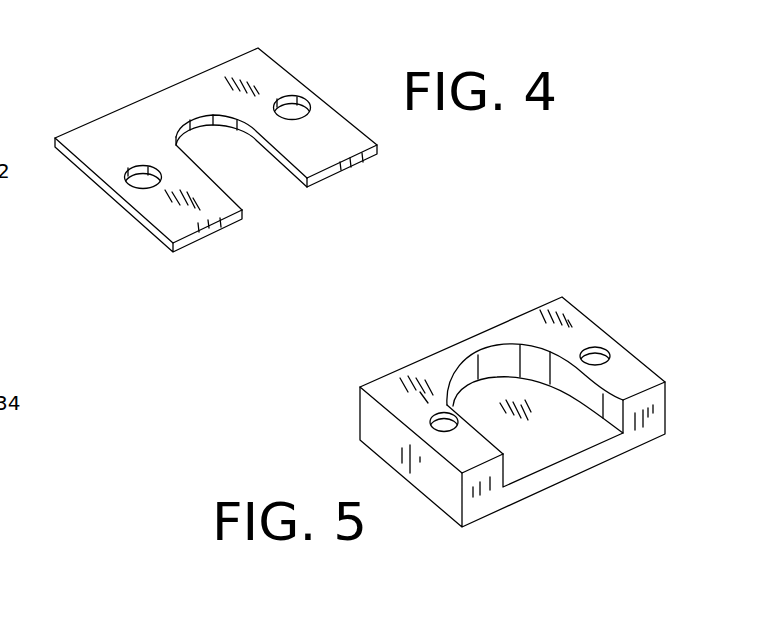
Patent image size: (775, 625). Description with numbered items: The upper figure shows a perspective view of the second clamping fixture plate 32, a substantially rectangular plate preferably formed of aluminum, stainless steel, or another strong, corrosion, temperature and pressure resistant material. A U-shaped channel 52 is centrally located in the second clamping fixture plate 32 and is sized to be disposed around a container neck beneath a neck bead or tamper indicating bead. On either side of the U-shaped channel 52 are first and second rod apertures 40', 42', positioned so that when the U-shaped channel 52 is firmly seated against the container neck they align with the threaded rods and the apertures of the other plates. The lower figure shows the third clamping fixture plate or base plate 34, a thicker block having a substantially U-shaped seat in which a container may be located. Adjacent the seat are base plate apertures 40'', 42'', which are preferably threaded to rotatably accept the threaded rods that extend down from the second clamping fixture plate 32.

In FIG. 4, the second clamping fixture plate 32 is at (285, 82).
In FIG. 4, the first rod aperture 40' is at (112, 212).
In FIG. 4, the second rod aperture 42' is at (326, 104).
In FIG. 4, the U-shaped channel 52 is at (273, 194).
In FIG. 5, the third clamping fixture plate or base plate 34 is at (541, 317).
In FIG. 5, the base plate aperture 40'' is at (368, 423).
In FIG. 5, the base plate aperture 42'' is at (630, 314).